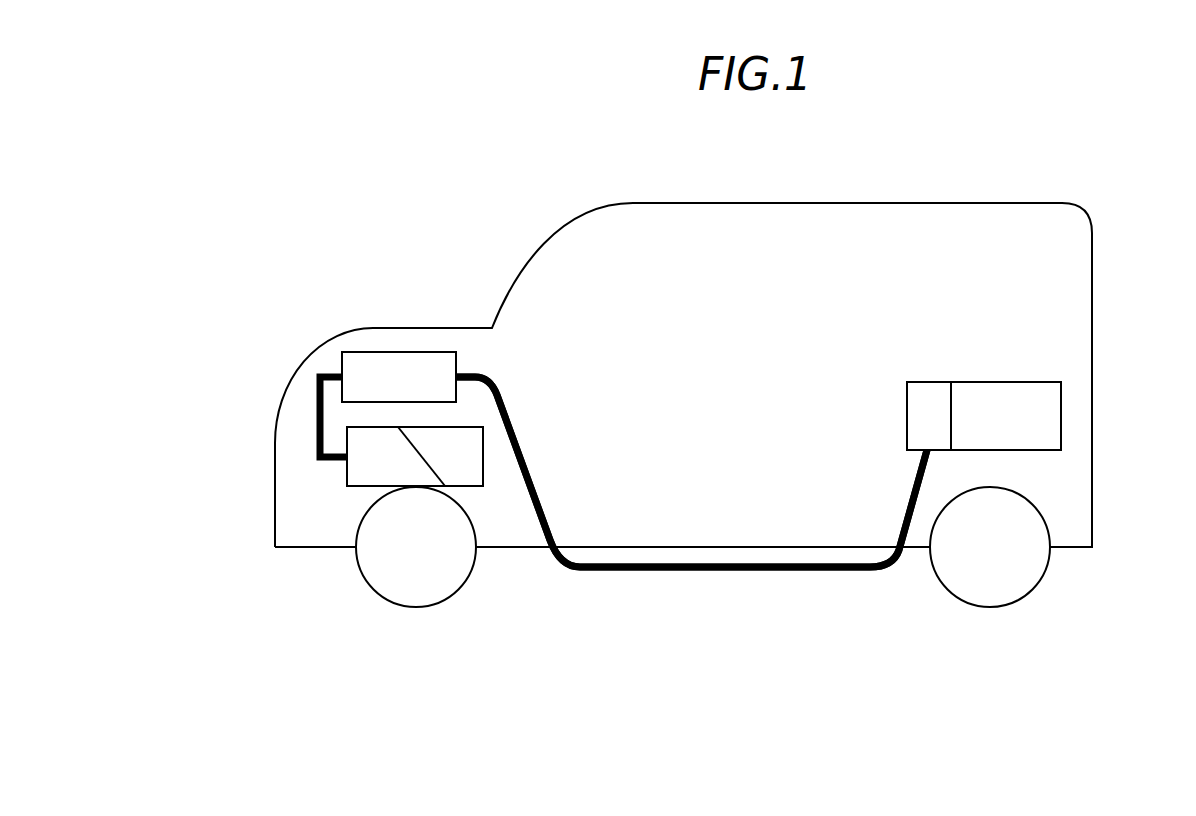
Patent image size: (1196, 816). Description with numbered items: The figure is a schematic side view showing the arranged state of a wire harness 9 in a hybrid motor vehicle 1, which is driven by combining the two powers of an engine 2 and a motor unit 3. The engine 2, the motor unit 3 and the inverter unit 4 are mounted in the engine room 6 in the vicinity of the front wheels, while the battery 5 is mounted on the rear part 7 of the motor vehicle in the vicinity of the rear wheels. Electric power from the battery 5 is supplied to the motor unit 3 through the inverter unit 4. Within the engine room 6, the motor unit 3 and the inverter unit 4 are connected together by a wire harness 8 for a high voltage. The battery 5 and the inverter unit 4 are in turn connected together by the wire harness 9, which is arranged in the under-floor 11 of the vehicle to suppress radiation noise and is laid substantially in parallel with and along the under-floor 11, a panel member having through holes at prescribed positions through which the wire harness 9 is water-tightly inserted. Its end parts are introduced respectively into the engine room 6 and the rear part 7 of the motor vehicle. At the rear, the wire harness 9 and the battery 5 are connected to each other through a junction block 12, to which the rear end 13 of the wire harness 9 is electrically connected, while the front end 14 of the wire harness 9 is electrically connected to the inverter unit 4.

The hybrid motor vehicle 1 is at (407, 210).
The engine 2 is at (470, 473).
The motor unit 3 is at (357, 477).
The inverter unit 4 is at (373, 362).
The battery 5 is at (1012, 395).
The engine room 6 is at (287, 512).
The rear part of the motor vehicle 7 is at (1063, 478).
The wire harness for a high voltage 8 is at (294, 412).
The wire harness 9 is at (624, 595).
The under-floor 11 is at (828, 548).
The junction block 12 is at (920, 392).
The rear end 13 is at (917, 472).
The front end 14 is at (490, 380).